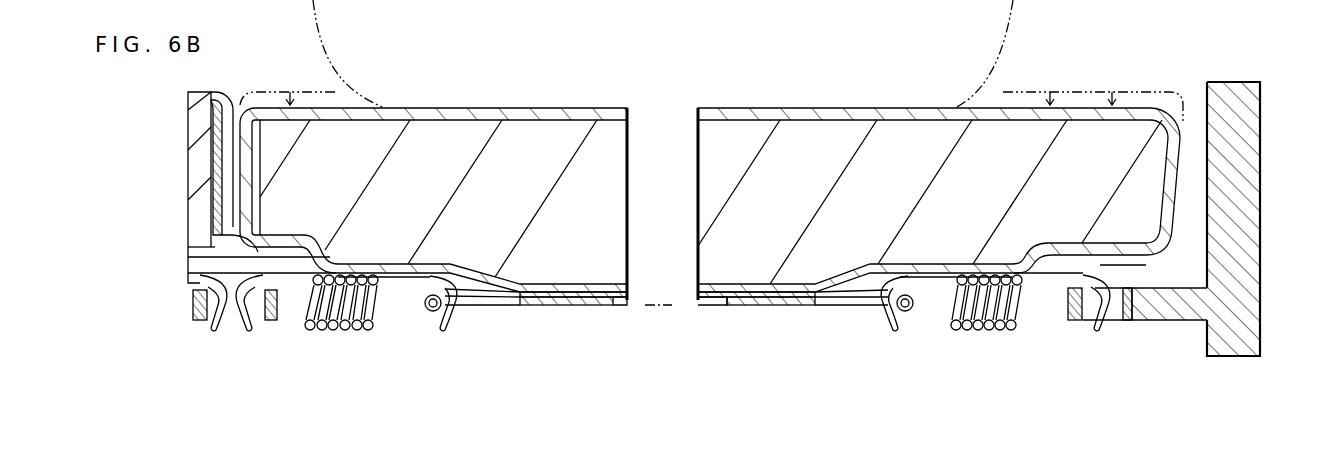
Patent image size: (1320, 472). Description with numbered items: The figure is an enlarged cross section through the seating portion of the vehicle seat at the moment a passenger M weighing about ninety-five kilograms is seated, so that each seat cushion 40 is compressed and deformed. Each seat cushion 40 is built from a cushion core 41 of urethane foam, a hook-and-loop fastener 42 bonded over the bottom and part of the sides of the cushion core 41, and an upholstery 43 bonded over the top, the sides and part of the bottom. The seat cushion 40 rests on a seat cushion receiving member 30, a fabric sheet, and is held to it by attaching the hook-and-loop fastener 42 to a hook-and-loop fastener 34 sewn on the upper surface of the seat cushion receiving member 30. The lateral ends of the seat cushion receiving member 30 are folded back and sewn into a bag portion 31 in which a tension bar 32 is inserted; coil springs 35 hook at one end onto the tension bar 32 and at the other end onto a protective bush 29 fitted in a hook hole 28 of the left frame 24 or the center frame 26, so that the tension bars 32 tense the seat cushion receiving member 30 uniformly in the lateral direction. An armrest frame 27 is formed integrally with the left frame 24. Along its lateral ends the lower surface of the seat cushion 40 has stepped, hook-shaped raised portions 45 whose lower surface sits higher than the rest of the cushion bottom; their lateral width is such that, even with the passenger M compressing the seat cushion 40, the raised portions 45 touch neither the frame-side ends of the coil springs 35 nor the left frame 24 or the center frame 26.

The passenger M is at (1035, 30).
The left frame 24 is at (1168, 312).
The center frame 26 is at (197, 308).
The armrest frame 27 is at (1248, 210).
The hook hole 28 is at (250, 320).
The protective bush 29 is at (207, 320).
The seat cushion receiving member 30 is at (613, 307).
The bag portion 31 is at (537, 307).
The tension bar 32 is at (432, 305).
The hook-and-loop fastener 34 is at (560, 293).
The coil spring 35 is at (355, 330).
The seat cushion 40 is at (558, 110).
The cushion core 41 is at (445, 170).
The hook-and-loop fastener 42 is at (460, 268).
The upholstery 43 is at (493, 113).
The raised portion 45 is at (290, 268).